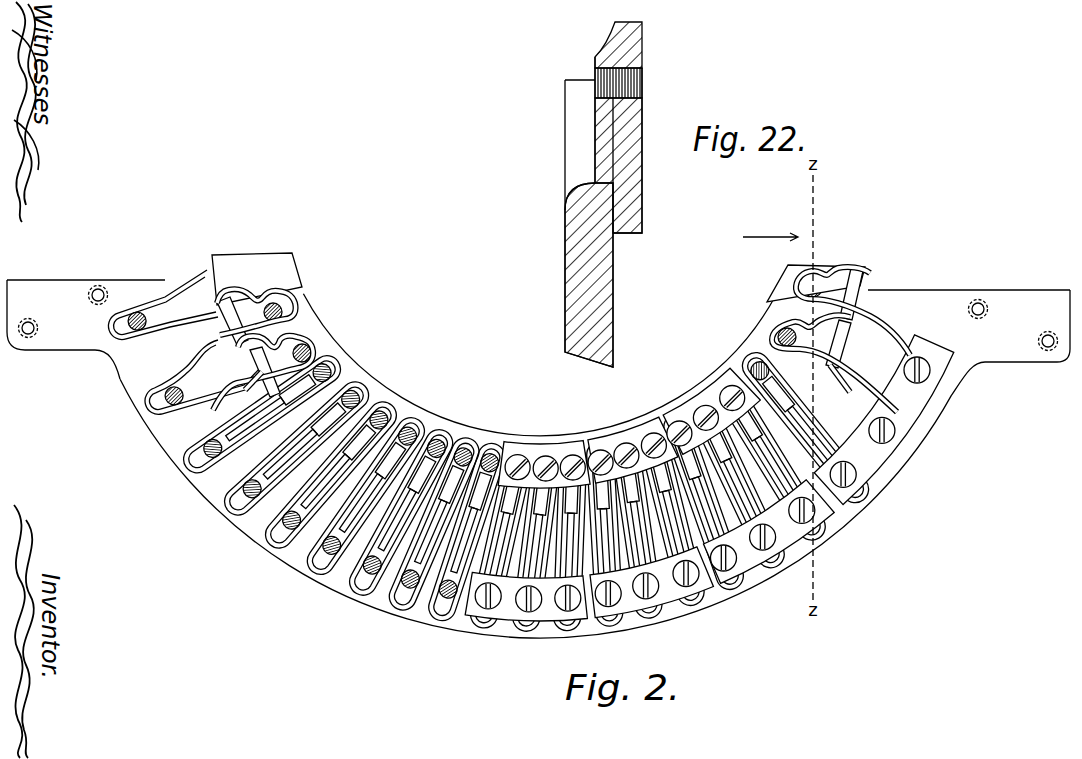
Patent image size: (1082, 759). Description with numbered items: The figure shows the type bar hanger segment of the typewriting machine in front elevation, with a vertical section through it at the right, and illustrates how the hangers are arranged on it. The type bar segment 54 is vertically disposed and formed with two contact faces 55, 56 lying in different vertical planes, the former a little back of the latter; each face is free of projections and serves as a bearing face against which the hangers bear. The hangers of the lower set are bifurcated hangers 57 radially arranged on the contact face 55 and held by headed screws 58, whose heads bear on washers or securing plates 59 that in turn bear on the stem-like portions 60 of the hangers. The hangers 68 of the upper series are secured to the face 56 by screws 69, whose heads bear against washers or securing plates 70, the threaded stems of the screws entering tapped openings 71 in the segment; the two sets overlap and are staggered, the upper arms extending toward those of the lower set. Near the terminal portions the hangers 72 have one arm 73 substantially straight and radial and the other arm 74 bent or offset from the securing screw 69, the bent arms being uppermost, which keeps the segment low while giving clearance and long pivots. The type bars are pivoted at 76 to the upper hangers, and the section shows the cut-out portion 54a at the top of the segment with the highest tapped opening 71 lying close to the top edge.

In FIG. 2, the type bar segment 54 is at (452, 423).
In FIG. 22, the type bar segment 54 is at (567, 215).
In FIG. 22, the cut-out portion 54a is at (622, 33).
In FIG. 2, the contact face 55 is at (210, 498).
In FIG. 22, the contact face 55 is at (613, 320).
In FIG. 22, the contact face 56 is at (642, 182).
In FIG. 2, the hanger 57 is at (215, 452).
In FIG. 2, the headed screw 58 is at (176, 405).
In FIG. 2, the washer or securing plate 59 is at (548, 618).
In FIG. 2, the stem-like portion 60 is at (195, 466).
In FIG. 2, the hanger 68 is at (493, 443).
In FIG. 2, the screw 69 is at (338, 368).
In FIG. 2, the washer or securing plate 70 is at (655, 426).
In FIG. 22, the tapped opening 71 is at (642, 81).
In FIG. 2, the terminal hanger 72 is at (316, 339).
In FIG. 2, the straight arm 73 is at (247, 357).
In FIG. 2, the bent arm 74 is at (248, 293).
In FIG. 2, the pivot 76 is at (258, 303).